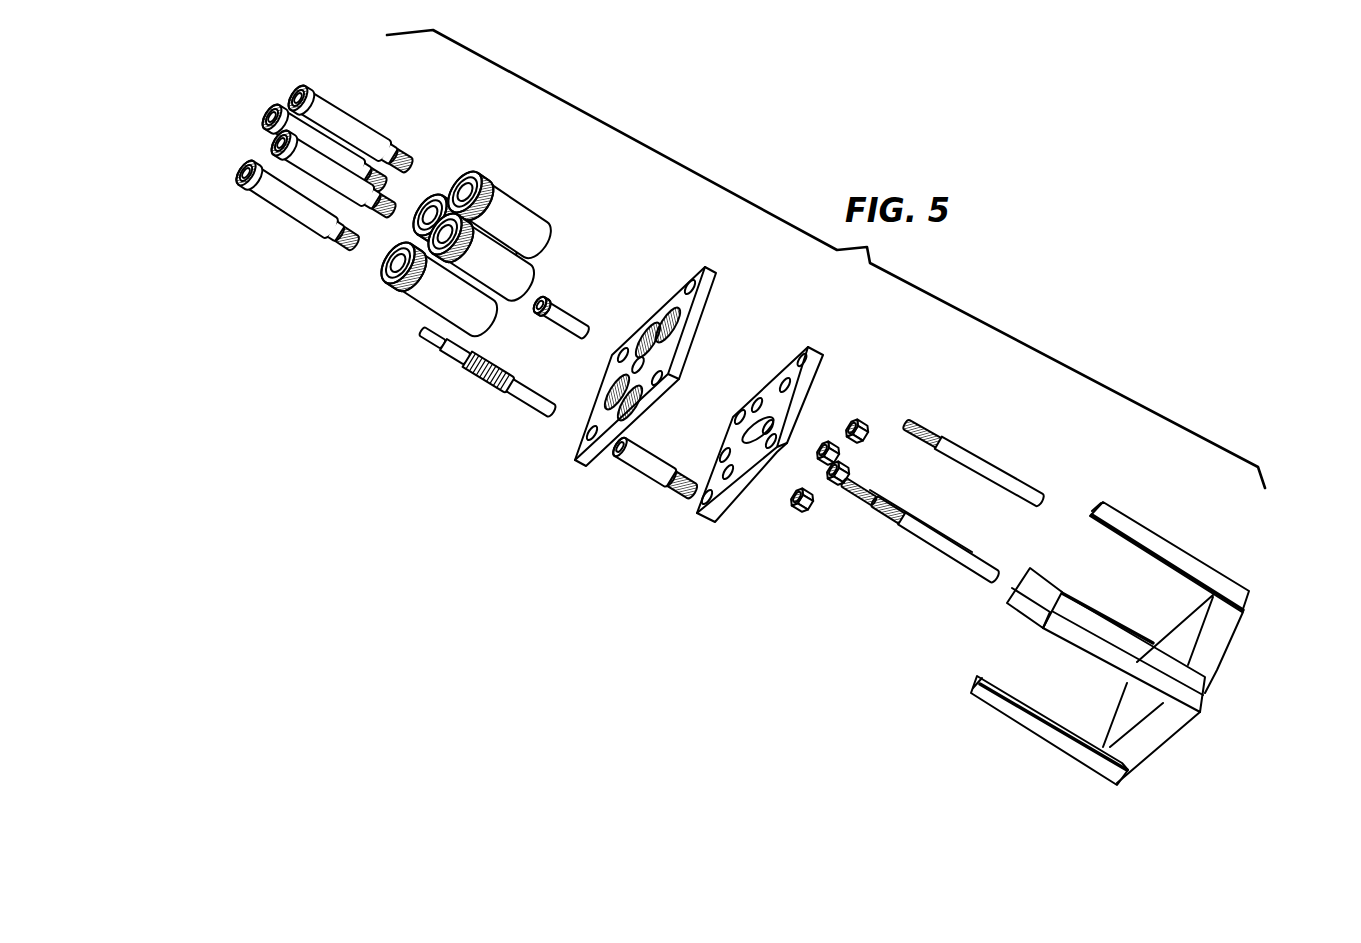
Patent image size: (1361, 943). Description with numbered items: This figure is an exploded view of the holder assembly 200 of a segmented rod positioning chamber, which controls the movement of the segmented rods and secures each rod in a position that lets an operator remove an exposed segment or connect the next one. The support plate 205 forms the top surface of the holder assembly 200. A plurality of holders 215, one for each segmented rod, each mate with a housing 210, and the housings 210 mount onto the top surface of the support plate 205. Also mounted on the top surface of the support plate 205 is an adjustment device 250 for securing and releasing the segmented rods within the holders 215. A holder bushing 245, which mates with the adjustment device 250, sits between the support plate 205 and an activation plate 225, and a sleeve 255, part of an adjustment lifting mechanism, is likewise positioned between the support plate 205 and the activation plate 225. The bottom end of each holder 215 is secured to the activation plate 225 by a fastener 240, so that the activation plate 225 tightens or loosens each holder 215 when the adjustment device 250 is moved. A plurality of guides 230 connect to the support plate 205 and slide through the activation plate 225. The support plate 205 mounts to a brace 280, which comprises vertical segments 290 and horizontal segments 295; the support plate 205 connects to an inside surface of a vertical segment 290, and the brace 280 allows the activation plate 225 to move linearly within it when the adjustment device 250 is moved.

The holder assembly 200 is at (457, 630).
The support plate 205 is at (708, 268).
The housing 210 is at (520, 188).
The holder 215 is at (245, 125).
The activation plate 225 is at (697, 522).
The guide 230 is at (985, 460).
The fastener 240 is at (835, 445).
The holder bushing 245 is at (633, 475).
The adjustment device 250 is at (468, 390).
The sleeve 255 is at (560, 302).
The brace 280 is at (1067, 622).
The vertical segment 290 is at (1038, 570).
The horizontal segment 295 is at (1167, 742).